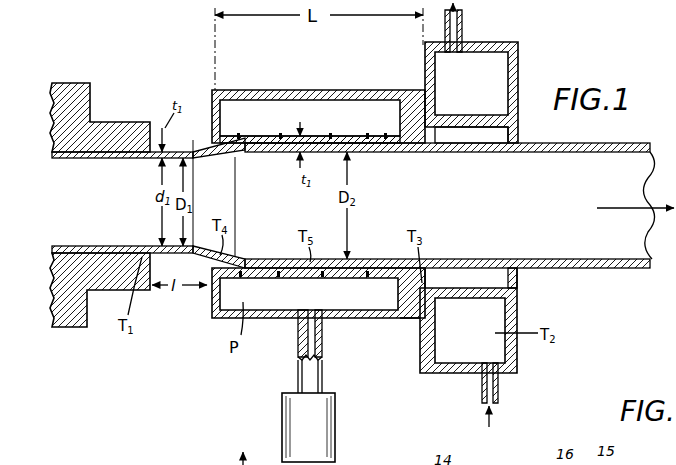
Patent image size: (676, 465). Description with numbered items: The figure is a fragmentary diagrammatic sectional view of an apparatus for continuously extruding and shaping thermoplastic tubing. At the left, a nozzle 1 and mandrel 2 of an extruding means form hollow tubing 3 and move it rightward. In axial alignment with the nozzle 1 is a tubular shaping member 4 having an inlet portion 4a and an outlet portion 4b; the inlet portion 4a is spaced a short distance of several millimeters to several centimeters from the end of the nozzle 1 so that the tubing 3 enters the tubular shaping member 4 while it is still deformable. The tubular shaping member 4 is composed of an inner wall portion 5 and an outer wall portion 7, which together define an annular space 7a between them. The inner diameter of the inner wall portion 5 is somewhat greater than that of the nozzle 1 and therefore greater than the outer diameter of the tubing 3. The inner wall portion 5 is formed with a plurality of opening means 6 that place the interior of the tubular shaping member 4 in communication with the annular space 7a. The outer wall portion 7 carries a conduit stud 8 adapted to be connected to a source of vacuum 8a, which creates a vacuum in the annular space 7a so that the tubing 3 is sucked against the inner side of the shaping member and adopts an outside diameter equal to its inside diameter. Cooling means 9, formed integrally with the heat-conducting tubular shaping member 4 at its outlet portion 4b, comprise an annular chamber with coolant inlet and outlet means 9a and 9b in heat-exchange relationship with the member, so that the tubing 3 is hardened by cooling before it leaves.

The nozzle 1 is at (112, 135).
The mandrel 2 is at (123, 178).
The hollow tubing 3 is at (186, 152).
The tubular shaping member 4 is at (255, 105).
The inlet portion 4a is at (212, 302).
The outlet portion 4b is at (450, 120).
The inner wall portion 5 is at (318, 136).
The opening means 6 is at (283, 135).
The outer wall portion 7 is at (375, 95).
The annular space 7a is at (362, 302).
The conduit stud 8 is at (300, 342).
The source of vacuum 8a is at (290, 418).
The cooling means 9 is at (490, 68).
The coolant inlet means 9a is at (482, 398).
The coolant outlet means 9b is at (462, 22).